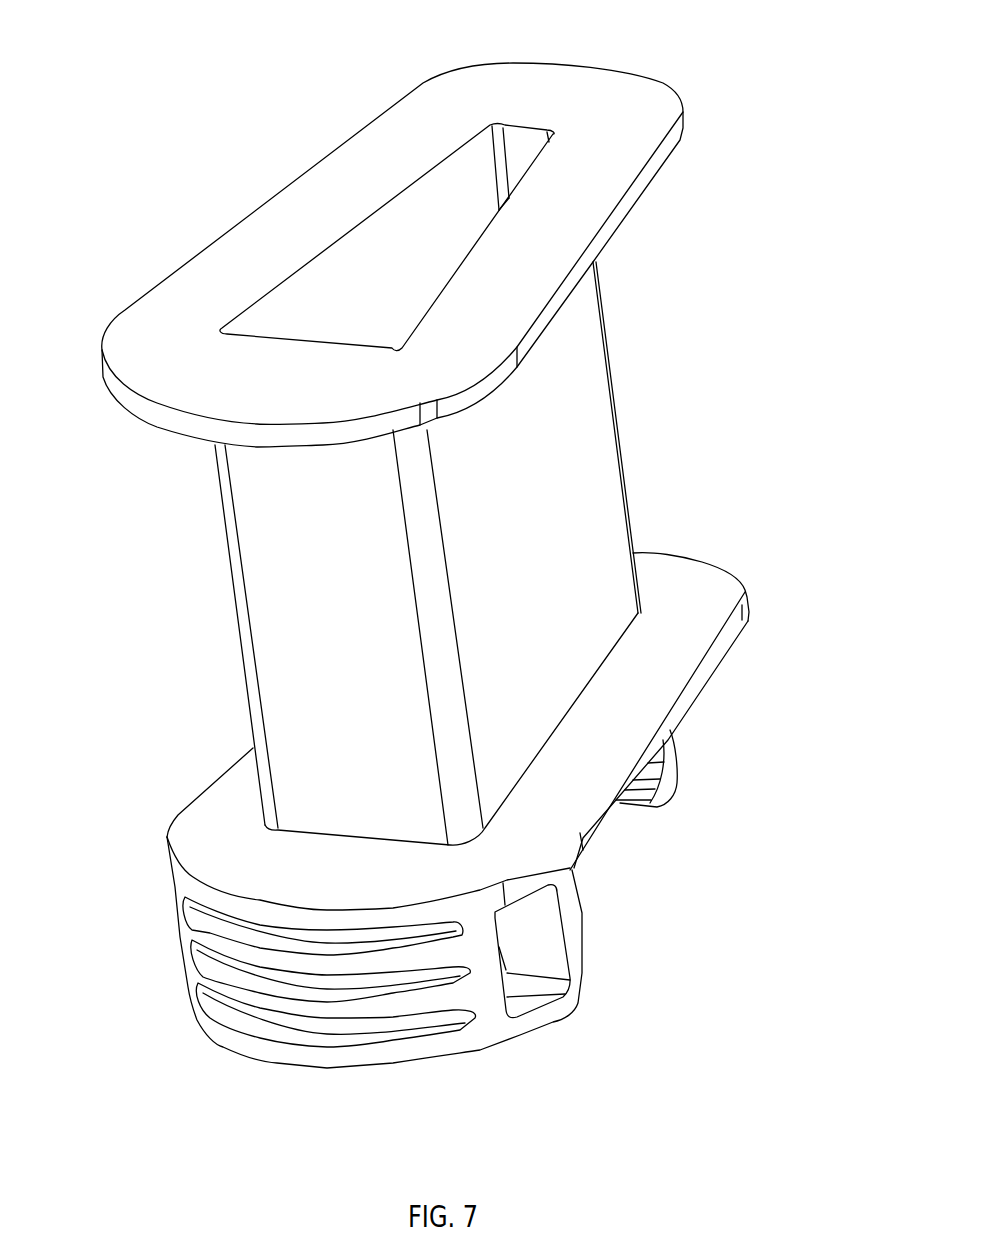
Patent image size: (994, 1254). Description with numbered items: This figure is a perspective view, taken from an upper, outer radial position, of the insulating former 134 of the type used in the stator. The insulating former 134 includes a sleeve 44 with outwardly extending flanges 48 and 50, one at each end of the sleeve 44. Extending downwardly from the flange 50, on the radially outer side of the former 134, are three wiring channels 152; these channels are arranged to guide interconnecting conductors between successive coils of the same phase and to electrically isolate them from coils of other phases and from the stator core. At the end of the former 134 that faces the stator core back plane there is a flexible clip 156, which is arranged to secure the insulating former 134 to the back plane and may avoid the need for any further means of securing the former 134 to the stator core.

The insulating former 134 is at (128, 127).
The flange 48 is at (617, 93).
The sleeve 44 is at (612, 412).
The flange 50 is at (697, 585).
The flexible clip 156 is at (665, 792).
The wiring channels 152 is at (305, 1037).